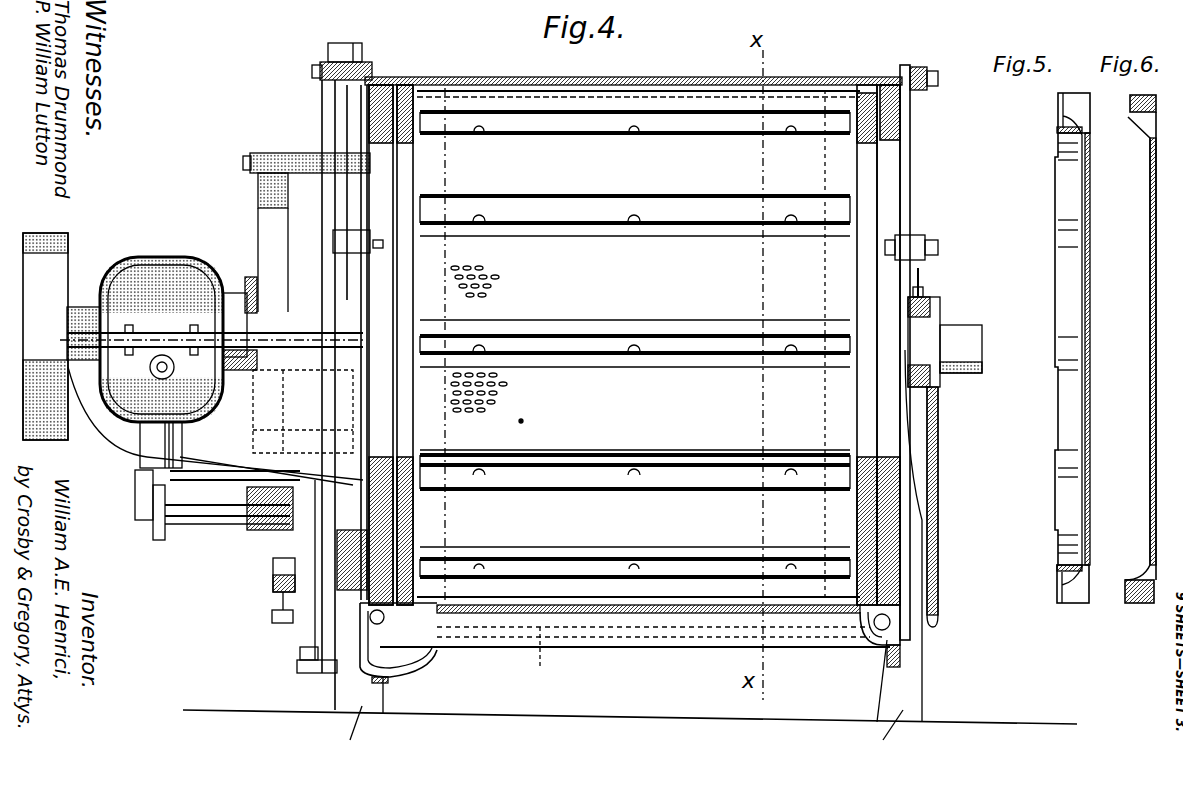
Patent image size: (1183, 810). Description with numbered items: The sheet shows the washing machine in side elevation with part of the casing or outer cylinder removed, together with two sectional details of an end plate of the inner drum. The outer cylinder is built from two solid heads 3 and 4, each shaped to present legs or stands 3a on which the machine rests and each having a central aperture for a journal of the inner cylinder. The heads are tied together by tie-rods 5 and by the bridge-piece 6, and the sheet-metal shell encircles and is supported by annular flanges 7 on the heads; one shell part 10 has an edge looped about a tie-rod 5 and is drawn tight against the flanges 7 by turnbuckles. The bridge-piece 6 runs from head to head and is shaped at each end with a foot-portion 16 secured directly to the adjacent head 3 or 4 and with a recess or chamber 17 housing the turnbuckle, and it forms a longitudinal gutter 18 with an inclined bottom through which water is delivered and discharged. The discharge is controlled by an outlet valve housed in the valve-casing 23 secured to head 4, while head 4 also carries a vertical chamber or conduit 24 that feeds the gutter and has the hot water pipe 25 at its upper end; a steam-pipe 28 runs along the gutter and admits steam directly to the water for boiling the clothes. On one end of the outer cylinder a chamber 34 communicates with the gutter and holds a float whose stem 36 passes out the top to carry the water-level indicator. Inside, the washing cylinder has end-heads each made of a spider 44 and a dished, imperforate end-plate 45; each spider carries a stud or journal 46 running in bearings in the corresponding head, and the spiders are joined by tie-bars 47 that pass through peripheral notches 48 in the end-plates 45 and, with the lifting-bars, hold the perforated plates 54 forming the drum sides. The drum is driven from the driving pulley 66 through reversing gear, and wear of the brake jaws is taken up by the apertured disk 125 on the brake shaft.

In FIG. 4, the head 3 is at (911, 170).
In FIG. 4, the legs or stands 3a is at (632, 694).
In FIG. 4, the head 4 is at (363, 198).
In FIG. 4, the tie-rods 5 is at (353, 263).
In FIG. 4, the bridge-piece 6 is at (707, 617).
In FIG. 4, the annular flanges 7 is at (370, 108).
In FIG. 4, the shell part 10 is at (633, 79).
In FIG. 4, the foot-portion 16 is at (382, 680).
In FIG. 4, the recess or chamber 17 is at (360, 627).
In FIG. 4, the longitudinal gutter 18 is at (612, 645).
In FIG. 4, the valve-casing 23 is at (323, 614).
In FIG. 4, the vertical chamber or conduit 24 is at (337, 215).
In FIG. 4, the hot water pipe 25 is at (340, 50).
In FIG. 4, the steam-pipe 28 is at (547, 662).
In FIG. 4, the chamber 34 is at (934, 433).
In FIG. 4, the stem 36 is at (928, 272).
In FIG. 4, the spider 44 is at (397, 433).
In FIG. 5, the end-plate 45 is at (1088, 400).
In FIG. 6, the end-plate 45 is at (1150, 388).
In FIG. 4, the stud or journal 46 is at (300, 310).
In FIG. 4, the tie-bars 47 is at (670, 340).
In FIG. 5, the peripheral notches 48 is at (1058, 143).
In FIG. 4, the perforated plates 54 is at (497, 247).
In FIG. 4, the driving pulley 66 is at (58, 250).
In FIG. 4, the disk 125 is at (161, 541).